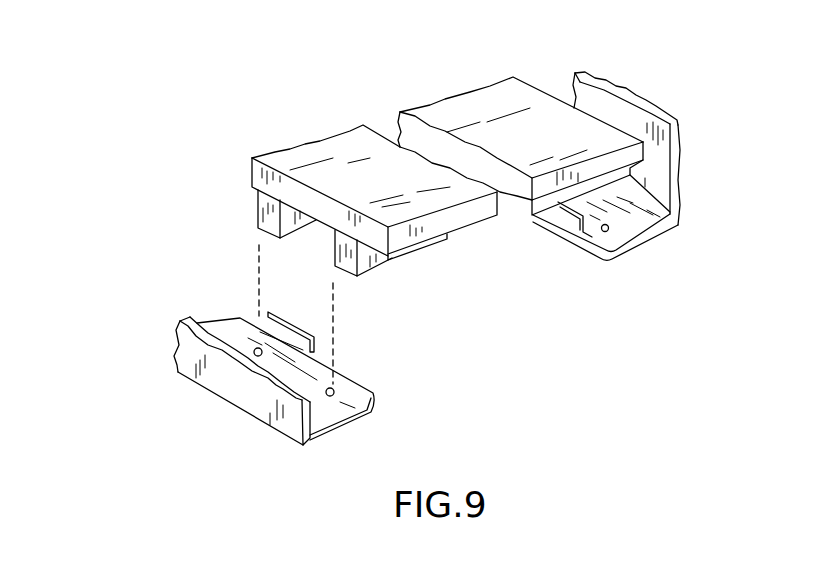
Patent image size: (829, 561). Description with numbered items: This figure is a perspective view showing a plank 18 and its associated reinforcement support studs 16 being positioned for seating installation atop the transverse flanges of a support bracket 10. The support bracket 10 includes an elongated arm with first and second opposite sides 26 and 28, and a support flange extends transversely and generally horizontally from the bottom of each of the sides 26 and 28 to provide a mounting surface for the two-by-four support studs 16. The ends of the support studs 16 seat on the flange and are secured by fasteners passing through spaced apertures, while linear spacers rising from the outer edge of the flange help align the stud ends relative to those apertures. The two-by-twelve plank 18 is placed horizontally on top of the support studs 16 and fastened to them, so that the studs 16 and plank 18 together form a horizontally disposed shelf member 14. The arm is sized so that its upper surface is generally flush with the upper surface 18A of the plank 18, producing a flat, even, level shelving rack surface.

The support bracket 10 is at (104, 374).
The shelf member 14 is at (392, 77).
The support stud 16 is at (258, 210).
The plank 18 is at (276, 137).
The upper surface 18A is at (484, 98).
The first side 26 is at (663, 168).
The second side 28 is at (230, 390).